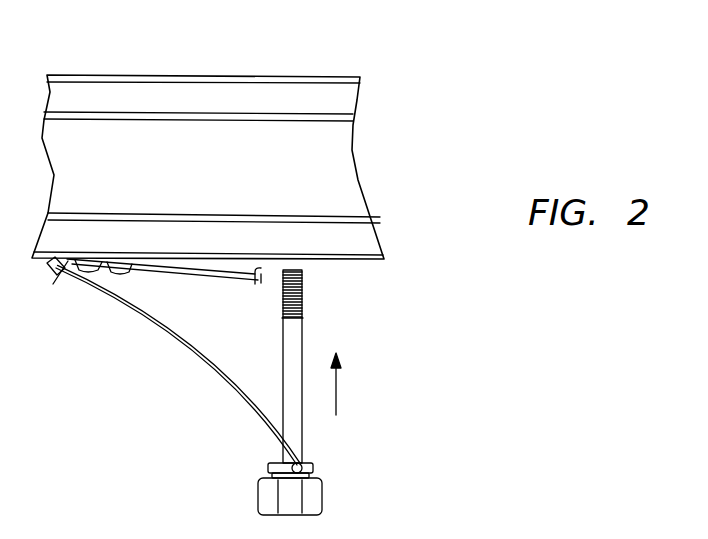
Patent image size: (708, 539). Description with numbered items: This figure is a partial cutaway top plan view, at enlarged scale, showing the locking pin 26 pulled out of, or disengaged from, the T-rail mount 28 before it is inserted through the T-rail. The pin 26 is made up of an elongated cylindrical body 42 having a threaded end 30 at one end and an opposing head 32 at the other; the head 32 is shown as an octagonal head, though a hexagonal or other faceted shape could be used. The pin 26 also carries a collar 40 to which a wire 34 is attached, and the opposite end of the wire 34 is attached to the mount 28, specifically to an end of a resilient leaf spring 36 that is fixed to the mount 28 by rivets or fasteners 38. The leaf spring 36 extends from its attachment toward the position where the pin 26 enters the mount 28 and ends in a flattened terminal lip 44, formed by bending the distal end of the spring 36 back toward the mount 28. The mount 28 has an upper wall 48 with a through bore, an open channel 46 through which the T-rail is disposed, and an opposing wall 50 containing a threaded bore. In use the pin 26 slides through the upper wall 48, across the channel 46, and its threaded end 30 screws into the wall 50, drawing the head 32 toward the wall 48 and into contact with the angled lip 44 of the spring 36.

The locking pin 26 is at (313, 342).
The T-rail mount 28 is at (362, 234).
The threaded end 30 is at (303, 302).
The head 32 is at (322, 497).
The wire 34 is at (238, 402).
The leaf spring 36 is at (207, 270).
The rivets or fasteners 38 is at (122, 270).
The collar 40 is at (313, 468).
The elongated cylindrical body 42 is at (302, 377).
The terminal lip 44 is at (267, 277).
The open channel 46 is at (308, 158).
The upper wall 48 is at (290, 240).
The opposing wall 50 is at (290, 93).